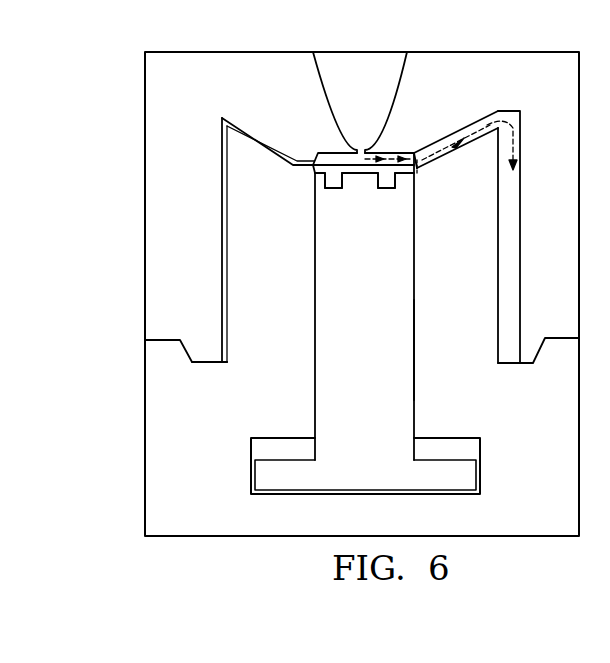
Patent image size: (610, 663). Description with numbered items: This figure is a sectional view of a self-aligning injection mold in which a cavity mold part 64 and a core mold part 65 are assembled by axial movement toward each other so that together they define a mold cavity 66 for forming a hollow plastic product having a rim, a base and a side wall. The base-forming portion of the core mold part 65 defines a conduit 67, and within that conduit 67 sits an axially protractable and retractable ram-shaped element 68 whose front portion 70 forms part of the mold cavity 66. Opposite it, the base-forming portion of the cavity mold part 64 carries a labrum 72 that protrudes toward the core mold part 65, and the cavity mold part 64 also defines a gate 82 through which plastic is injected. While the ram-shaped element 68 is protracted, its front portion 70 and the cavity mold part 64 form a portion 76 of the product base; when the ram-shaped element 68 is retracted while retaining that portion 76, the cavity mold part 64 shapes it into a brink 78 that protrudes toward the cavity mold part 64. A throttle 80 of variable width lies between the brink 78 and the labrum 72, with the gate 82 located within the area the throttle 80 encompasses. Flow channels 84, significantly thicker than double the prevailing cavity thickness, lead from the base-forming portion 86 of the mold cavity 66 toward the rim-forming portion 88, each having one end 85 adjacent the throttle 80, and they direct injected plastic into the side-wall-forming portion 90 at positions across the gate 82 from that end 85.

The cavity mold part 64 is at (150, 182).
The core mold part 65 is at (150, 380).
The mold cavity 66 is at (517, 292).
The conduit 67 is at (407, 348).
The ram-shaped element 68 is at (405, 290).
The front portion 70 is at (348, 176).
The labrum 72 is at (471, 143).
The portion of the base 76 is at (373, 181).
The brink 78 is at (407, 181).
The throttle 80 is at (414, 154).
The gate 82 is at (358, 148).
The flow channels 84 is at (507, 183).
The one end 85 is at (417, 170).
The base-forming portion 86 is at (388, 150).
The rim-forming portion 88 is at (222, 350).
The side-wall-forming portion 90 is at (222, 228).